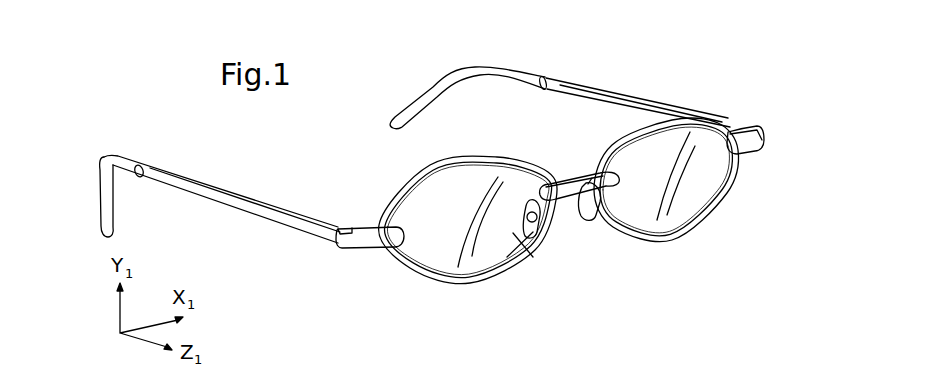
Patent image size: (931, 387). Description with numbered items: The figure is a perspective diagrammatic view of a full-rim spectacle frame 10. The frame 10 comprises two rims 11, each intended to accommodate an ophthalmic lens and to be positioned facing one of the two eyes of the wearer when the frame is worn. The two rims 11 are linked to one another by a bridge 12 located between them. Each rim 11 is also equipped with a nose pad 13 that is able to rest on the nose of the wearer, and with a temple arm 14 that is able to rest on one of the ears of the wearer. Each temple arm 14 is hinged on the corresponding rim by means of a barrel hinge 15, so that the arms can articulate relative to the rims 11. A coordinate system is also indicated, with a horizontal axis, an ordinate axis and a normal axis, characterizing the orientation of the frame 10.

The full-rim spectacle frame 10 is at (331, 288).
The rim 11 is at (447, 288).
The bridge 12 is at (583, 176).
The nose pad 13 is at (513, 228).
The temple arm 14 is at (282, 218).
The barrel hinge 15 is at (345, 229).